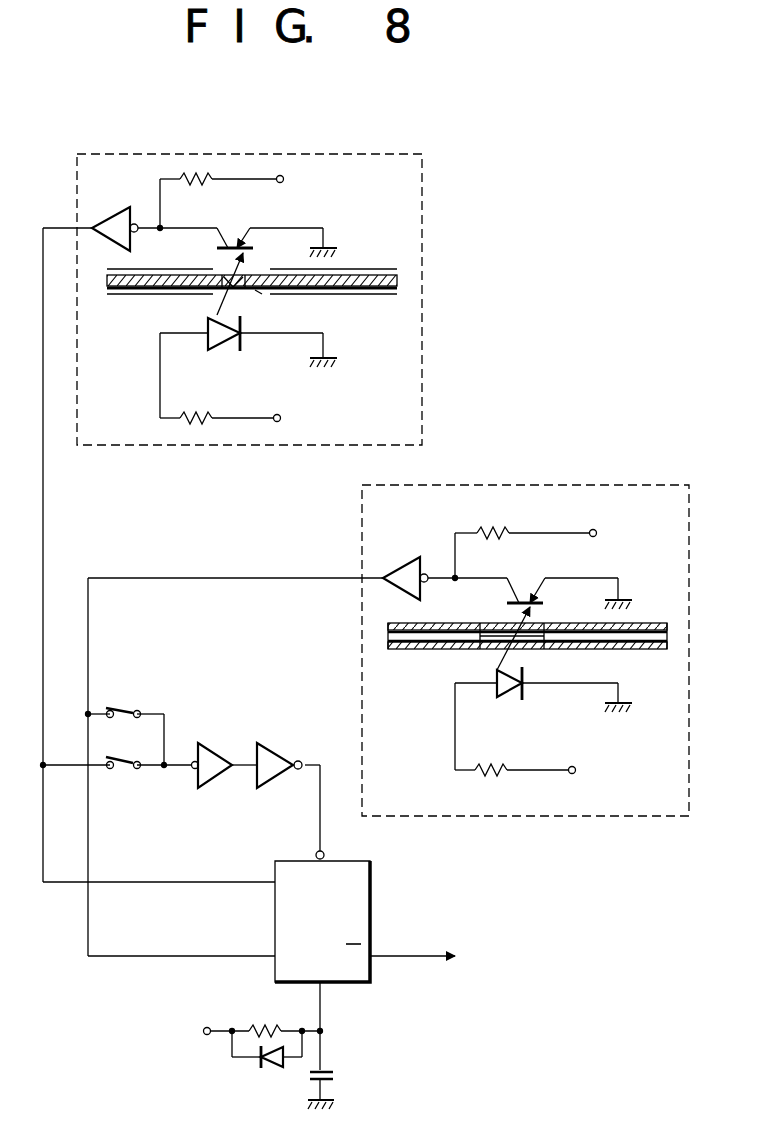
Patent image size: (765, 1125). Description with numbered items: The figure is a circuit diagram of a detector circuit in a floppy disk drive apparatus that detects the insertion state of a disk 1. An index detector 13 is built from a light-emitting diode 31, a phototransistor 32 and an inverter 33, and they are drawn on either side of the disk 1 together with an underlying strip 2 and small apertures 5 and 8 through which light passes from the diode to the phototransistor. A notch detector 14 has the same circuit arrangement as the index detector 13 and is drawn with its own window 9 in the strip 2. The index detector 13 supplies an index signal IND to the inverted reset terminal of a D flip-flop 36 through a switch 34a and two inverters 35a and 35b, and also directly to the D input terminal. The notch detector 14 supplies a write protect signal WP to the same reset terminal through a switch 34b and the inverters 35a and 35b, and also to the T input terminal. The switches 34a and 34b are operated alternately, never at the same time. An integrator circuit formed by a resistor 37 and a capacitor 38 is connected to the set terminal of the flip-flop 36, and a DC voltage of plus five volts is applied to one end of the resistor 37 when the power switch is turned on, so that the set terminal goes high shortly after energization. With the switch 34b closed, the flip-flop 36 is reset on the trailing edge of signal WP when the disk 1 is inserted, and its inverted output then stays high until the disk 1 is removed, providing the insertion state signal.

The disk 1 is at (375, 273).
The strip / web 2 is at (360, 292).
The aperture / slit 5 is at (246, 291).
The mark 8 is at (258, 292).
The window 9 is at (492, 622).
The index detector 13 is at (318, 150).
The notch detector 14 is at (522, 483).
The light-emitting diode 31 is at (222, 346).
The phototransistor 32 is at (234, 232).
The inverter 33 is at (112, 210).
The switch 34a is at (128, 774).
The switch 34b is at (122, 706).
The inverter 35a is at (212, 742).
The inverter 35b is at (280, 742).
The D flip-flop 36 is at (371, 905).
The resistor 37 is at (255, 1024).
The capacitor 38 is at (335, 1076).